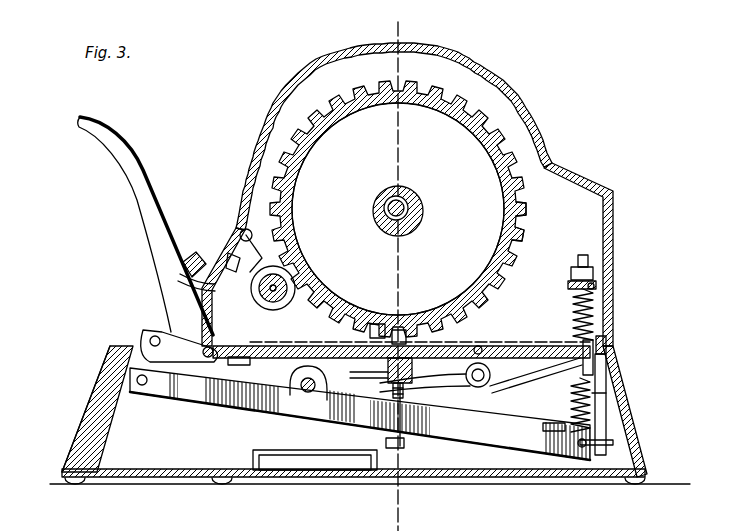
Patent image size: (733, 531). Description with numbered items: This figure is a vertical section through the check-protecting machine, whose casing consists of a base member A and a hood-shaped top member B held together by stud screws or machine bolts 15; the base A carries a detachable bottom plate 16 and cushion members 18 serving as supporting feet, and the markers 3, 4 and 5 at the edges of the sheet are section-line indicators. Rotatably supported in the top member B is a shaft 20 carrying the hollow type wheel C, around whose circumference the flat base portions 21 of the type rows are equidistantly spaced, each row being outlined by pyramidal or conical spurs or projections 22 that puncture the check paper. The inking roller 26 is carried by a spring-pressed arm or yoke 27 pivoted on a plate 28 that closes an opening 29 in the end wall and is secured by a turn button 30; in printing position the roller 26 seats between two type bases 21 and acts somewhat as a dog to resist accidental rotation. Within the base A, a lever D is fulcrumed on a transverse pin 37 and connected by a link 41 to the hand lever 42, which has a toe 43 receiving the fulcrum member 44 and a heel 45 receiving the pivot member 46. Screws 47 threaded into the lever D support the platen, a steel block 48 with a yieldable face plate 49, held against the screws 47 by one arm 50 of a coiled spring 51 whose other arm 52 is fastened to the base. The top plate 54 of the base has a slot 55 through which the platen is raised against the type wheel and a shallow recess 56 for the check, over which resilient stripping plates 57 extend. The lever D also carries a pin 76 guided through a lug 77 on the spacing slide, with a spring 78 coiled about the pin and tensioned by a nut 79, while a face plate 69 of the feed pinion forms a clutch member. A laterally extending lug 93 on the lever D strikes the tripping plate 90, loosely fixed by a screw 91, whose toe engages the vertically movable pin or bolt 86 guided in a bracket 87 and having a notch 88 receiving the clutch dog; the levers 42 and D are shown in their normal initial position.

The center line 5 is at (397, 267).
The operating lever or hand lever 42 is at (140, 168).
The plate 28 is at (226, 256).
The turn button 30 is at (186, 267).
The opening 29 is at (180, 288).
The spring pressed arm or yoke 27 is at (292, 229).
The shaft 20 is at (423, 211).
The type rows (flat base portions) 21 is at (517, 228).
The spurs or projections 22 is at (519, 255).
The top member B is at (520, 136).
The type wheel C is at (310, 162).
The inking roller 26 is at (297, 279).
The shallow recess 56 is at (377, 324).
The slot 55 is at (401, 330).
The stripping plates 57 is at (302, 347).
The pin 76 is at (590, 260).
The nut 79 is at (594, 274).
The lug 77 is at (590, 288).
The spring 78 is at (585, 322).
The notch or recess 88 is at (606, 362).
The face plate 69 is at (607, 382).
The pin or bolt 86 is at (608, 394).
The bracket 87 is at (640, 450).
The plate (tripping plate) 90 is at (522, 346).
The screw or fastening member 91 is at (478, 346).
The face plate 49 is at (384, 366).
The block 48 is at (413, 372).
The arm of coiled spring 50 is at (432, 390).
The coiled spring 51 is at (484, 388).
The other arm of coiled spring 52 is at (540, 380).
The laterally extending lug 93 is at (553, 427).
The top plate 54 is at (293, 376).
The fulcrum member 44 is at (228, 334).
The heel 45 is at (157, 335).
The pivot member 46 is at (150, 340).
The link 41 is at (150, 362).
The base member A is at (88, 438).
The toe 43 is at (203, 392).
The stud screws or machine bolts 15 is at (238, 405).
The lever D is at (276, 452).
The transverse pin or fulcrum member 37 is at (308, 393).
The screws 47 is at (403, 447).
The bottom plate 16 is at (516, 480).
The cushion members 18 is at (76, 483).
The section line 3 is at (261, 522).
The section line 4 is at (321, 523).